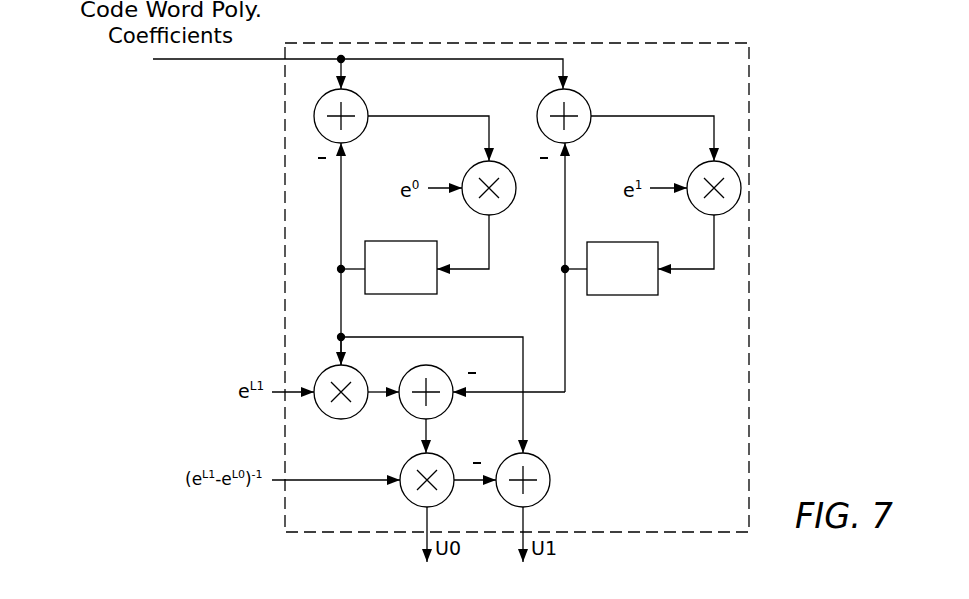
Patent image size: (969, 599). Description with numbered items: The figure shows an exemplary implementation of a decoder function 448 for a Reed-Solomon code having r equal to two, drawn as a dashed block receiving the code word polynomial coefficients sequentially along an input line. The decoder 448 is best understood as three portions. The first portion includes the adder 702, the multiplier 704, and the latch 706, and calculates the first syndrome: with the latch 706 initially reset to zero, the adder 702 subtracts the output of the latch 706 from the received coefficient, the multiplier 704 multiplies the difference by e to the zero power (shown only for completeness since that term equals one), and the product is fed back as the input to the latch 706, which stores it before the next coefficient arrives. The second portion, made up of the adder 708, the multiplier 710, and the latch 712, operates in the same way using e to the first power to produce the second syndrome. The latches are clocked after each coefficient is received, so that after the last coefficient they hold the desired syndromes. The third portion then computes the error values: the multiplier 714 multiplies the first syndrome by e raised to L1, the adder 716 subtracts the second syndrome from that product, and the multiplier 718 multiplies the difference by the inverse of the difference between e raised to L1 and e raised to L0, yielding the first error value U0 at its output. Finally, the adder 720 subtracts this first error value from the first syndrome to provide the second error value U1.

The decoder function 448 is at (742, 74).
The adder 702 is at (360, 139).
The multiplier 704 is at (497, 214).
The latch 706 is at (398, 295).
The adder 708 is at (582, 139).
The multiplier 710 is at (698, 208).
The latch 712 is at (622, 296).
The multiplier 714 is at (346, 419).
The adder 716 is at (445, 416).
The multiplier 718 is at (408, 499).
The adder 720 is at (541, 503).